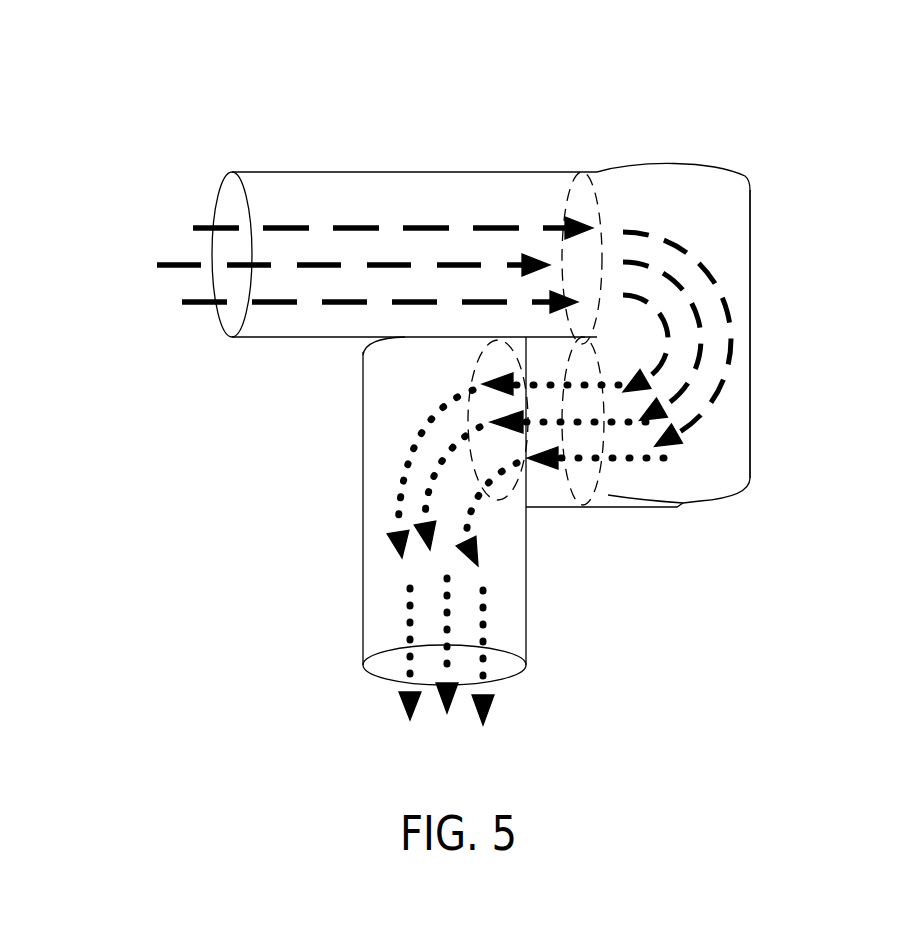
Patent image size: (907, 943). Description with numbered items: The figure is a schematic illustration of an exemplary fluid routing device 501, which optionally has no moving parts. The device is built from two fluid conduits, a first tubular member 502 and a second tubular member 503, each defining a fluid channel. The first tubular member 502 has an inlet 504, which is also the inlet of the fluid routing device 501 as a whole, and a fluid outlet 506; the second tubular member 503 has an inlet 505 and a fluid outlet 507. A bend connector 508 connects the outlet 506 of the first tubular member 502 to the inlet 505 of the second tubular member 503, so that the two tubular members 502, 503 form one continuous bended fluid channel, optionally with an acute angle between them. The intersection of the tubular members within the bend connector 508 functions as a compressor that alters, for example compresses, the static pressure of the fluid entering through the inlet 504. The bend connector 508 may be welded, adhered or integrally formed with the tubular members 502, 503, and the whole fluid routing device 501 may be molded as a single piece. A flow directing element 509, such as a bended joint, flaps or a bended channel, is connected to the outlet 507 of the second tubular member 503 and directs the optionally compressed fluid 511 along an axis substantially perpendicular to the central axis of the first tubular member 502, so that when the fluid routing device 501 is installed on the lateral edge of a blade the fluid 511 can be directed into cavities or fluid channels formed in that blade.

The fluid routing device 501 is at (808, 228).
The first tubular member 502 is at (451, 155).
The second tubular member 503 is at (557, 510).
The inlet 504 is at (214, 242).
The inlet 505 is at (607, 511).
The fluid outlet 506 is at (577, 155).
The fluid outlet 507 is at (451, 376).
The bend connector 508 is at (769, 333).
The flow directing element 509 is at (345, 513).
The fluid 511 is at (636, 438).